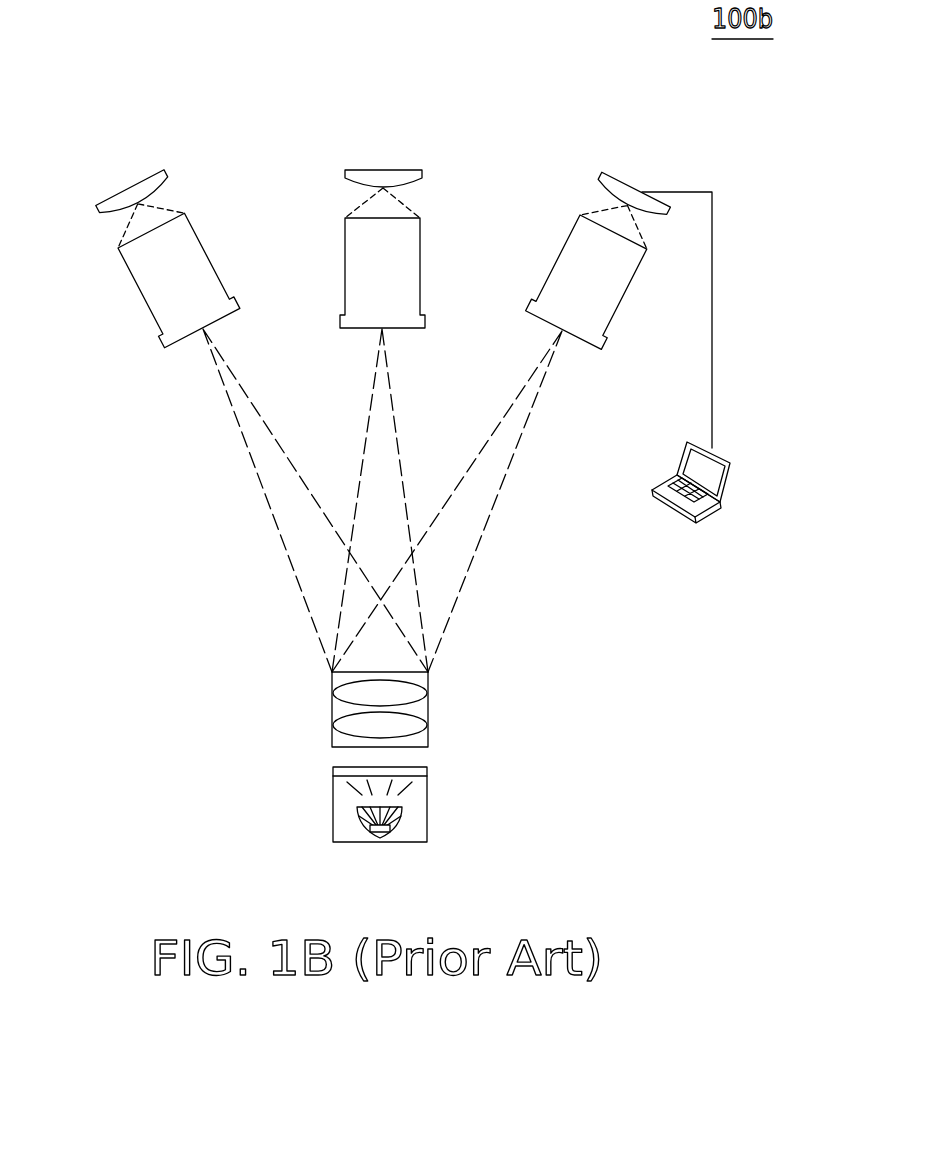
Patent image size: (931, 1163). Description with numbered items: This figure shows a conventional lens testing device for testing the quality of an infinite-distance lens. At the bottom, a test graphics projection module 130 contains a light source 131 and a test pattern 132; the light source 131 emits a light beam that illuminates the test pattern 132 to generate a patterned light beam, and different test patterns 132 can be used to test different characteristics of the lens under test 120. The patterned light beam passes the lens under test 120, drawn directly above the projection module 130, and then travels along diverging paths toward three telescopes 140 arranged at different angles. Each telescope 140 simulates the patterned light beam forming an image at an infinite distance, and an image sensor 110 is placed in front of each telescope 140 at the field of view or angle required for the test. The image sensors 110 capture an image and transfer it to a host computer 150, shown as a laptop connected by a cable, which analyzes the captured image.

The image sensor 110 is at (158, 180).
The lens under test 120 is at (428, 710).
The test graphics projection module 130 is at (391, 800).
The light source 131 is at (357, 808).
The test pattern 132 is at (332, 768).
The telescope 140 is at (187, 238).
The host computer 150 is at (670, 498).